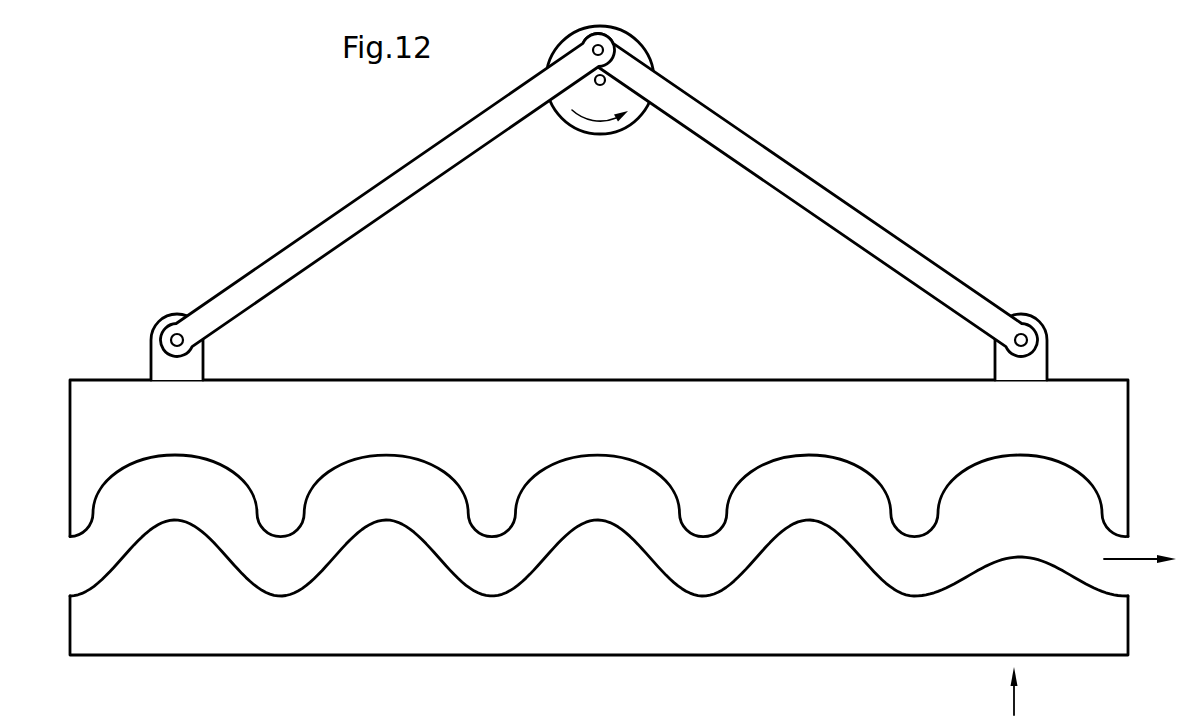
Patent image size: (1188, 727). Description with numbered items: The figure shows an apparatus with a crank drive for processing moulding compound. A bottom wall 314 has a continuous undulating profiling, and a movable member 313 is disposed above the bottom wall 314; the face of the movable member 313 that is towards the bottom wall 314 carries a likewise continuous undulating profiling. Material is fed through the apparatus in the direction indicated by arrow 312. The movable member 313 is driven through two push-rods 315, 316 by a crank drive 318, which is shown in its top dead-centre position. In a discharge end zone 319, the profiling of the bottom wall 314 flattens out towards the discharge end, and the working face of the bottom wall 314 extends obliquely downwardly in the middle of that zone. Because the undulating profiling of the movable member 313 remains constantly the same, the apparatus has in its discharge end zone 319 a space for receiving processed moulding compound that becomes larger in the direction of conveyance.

The arrow 312 is at (1133, 557).
The movable member 313 is at (505, 392).
The bottom wall 314 is at (551, 637).
The push-rod 315 is at (337, 232).
The push-rod 316 is at (800, 193).
The crank drive 318 is at (648, 52).
The discharge end zone 319 is at (1037, 692).